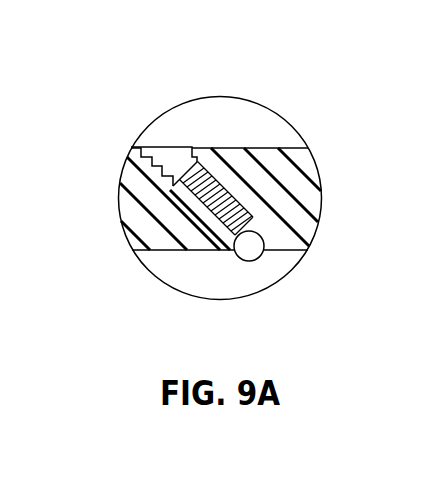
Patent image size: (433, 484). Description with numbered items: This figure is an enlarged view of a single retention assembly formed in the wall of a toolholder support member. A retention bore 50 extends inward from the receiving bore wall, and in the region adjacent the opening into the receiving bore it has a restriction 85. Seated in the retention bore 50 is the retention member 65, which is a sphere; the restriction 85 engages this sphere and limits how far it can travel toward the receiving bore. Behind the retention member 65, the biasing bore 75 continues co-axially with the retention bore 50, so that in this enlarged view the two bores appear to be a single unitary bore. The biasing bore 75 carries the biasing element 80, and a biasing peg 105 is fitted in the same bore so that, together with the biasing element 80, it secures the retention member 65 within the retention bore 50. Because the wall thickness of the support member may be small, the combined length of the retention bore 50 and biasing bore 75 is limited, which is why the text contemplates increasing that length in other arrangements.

The retention bore 50 is at (308, 242).
The retention member 65 is at (262, 236).
The biasing bore 75 is at (240, 182).
The biasing element 80 is at (223, 168).
The restriction 85 is at (320, 192).
The biasing peg 105 is at (177, 147).